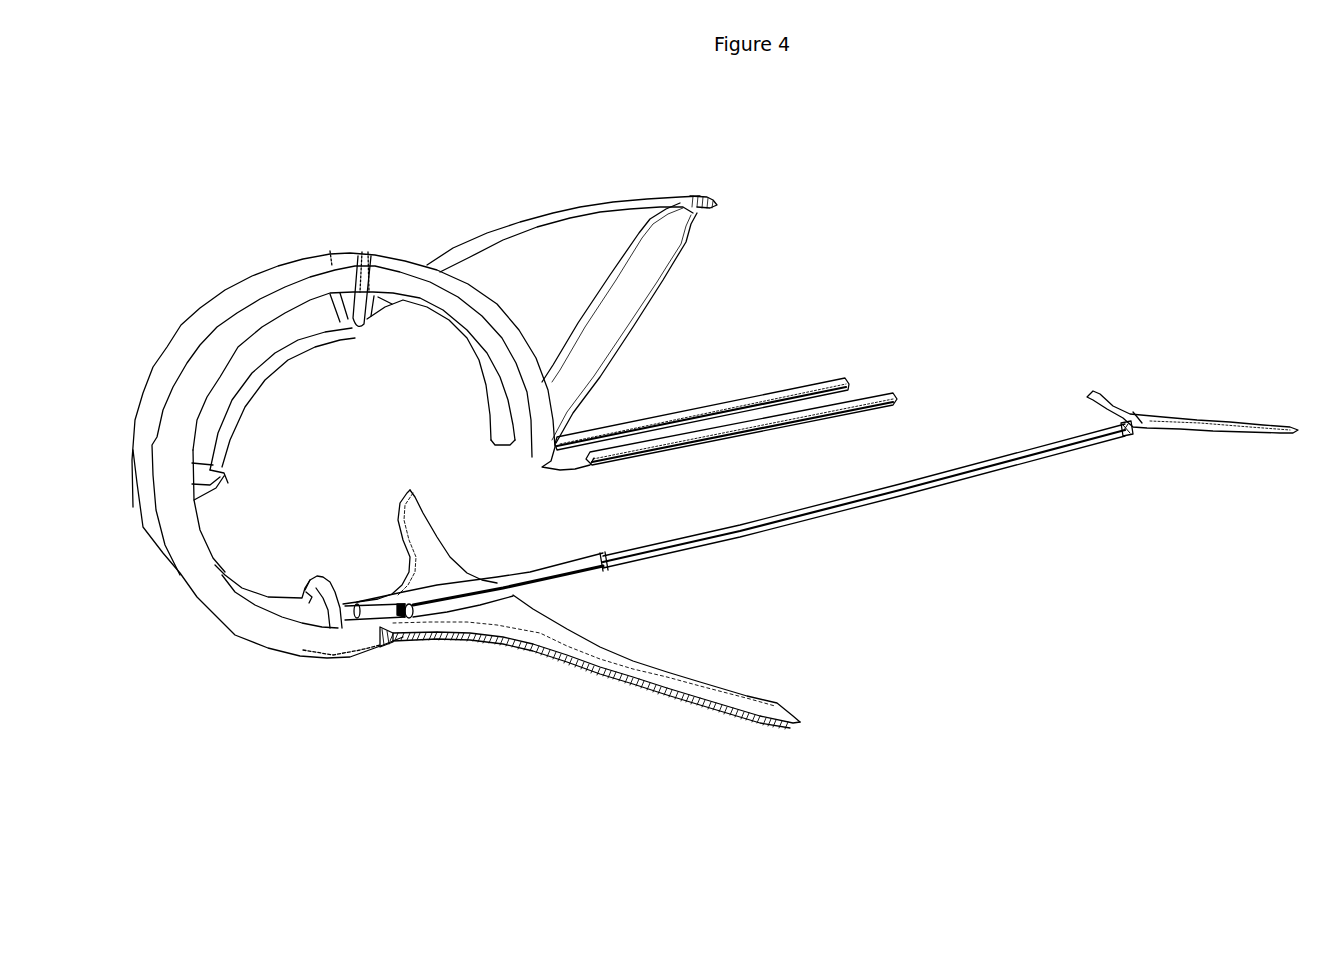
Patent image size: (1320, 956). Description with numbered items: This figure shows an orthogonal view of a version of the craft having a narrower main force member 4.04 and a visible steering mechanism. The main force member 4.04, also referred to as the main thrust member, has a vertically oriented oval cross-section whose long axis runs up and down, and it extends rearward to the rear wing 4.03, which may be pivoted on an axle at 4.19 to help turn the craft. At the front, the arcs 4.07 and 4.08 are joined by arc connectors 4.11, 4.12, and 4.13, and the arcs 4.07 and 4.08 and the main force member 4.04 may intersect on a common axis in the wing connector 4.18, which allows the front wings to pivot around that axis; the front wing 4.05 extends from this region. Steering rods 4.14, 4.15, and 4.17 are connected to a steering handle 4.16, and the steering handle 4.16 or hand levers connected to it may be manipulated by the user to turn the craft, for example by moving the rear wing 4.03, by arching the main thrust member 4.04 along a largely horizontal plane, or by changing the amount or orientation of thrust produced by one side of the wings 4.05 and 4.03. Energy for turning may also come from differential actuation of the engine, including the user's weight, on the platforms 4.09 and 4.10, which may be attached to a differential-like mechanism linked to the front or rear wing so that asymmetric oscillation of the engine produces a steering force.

The rear wing 4.03 is at (1105, 403).
The main force member 4.04 is at (793, 520).
The wing 4.05 is at (753, 707).
The arc 4.07 is at (208, 312).
The arc 4.08 is at (247, 623).
The platform 4.09 is at (845, 383).
The platform 4.10 is at (893, 397).
The arc connector 4.11 is at (365, 330).
The arc connector 4.12 is at (222, 486).
The arc connector 4.13 is at (320, 583).
The steering rod 4.14 is at (295, 378).
The steering rod 4.15 is at (612, 205).
The steering handle 4.16 is at (718, 205).
The steering rod 4.17 is at (610, 357).
The wing connector 4.18 is at (498, 592).
The axle 4.19 is at (1125, 430).